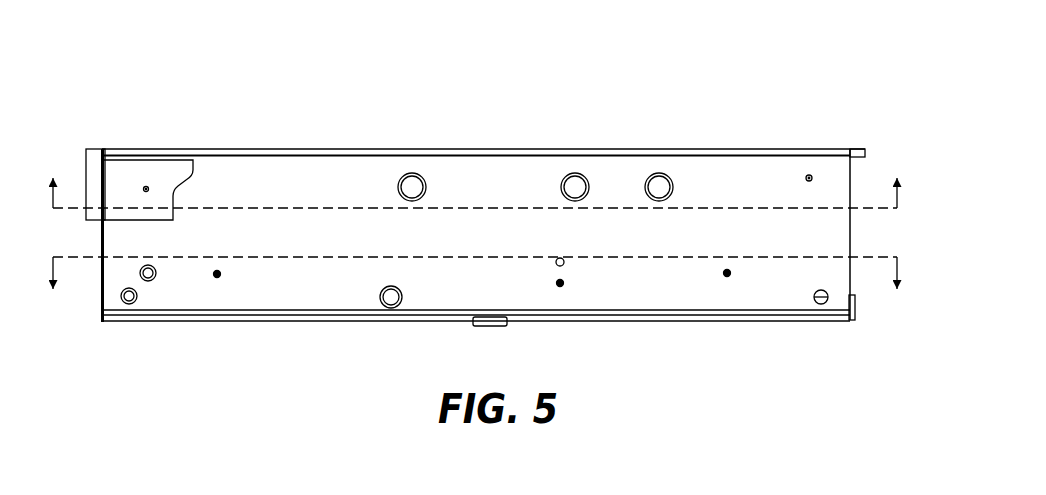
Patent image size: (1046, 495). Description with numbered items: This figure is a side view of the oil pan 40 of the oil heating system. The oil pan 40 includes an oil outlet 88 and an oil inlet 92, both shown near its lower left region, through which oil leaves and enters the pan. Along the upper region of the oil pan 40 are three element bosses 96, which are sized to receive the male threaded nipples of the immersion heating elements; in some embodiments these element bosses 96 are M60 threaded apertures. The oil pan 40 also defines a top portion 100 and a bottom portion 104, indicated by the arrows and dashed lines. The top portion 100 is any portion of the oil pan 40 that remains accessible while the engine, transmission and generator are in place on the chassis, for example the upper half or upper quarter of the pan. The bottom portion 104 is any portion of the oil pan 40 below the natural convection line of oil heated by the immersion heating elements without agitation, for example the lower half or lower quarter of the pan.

The oil pan 40 is at (763, 102).
The oil outlet 88 is at (151, 280).
The oil inlet 92 is at (128, 304).
The element bosses 96 is at (412, 186).
The top portion 100 is at (865, 168).
The bottom portion 104 is at (865, 303).